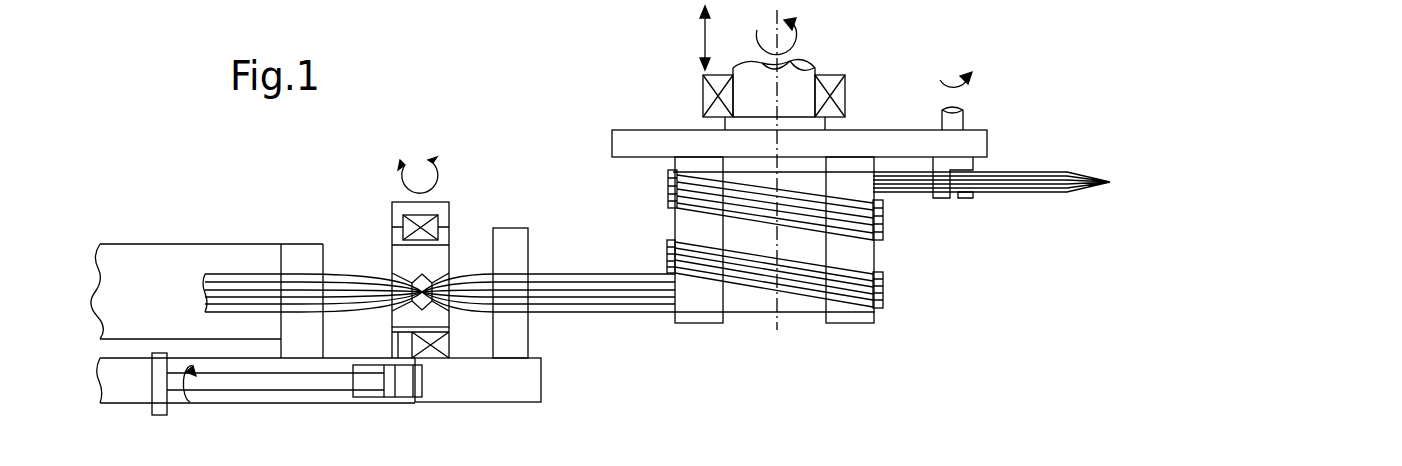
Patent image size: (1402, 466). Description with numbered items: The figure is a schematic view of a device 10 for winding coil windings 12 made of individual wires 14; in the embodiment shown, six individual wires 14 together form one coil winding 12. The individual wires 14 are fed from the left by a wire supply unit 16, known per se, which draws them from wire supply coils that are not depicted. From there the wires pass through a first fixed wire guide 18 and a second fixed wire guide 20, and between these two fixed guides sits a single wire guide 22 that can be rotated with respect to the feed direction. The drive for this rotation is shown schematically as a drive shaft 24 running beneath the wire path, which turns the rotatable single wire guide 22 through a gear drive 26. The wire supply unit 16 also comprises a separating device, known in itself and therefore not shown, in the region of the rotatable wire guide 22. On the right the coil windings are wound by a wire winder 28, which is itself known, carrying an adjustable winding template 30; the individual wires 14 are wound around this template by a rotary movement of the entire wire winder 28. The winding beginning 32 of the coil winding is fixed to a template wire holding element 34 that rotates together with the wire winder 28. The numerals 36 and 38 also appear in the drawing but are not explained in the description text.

The device for winding coil windings 10 is at (549, 205).
The coil winding 12 is at (765, 293).
The individual wires 14 is at (266, 313).
The wire supply unit 16 is at (153, 257).
The first fixed wire guide 18 is at (298, 244).
The second fixed wire guide 20 is at (502, 228).
The rotatable single wire guide 22 is at (402, 261).
The drive shaft 24 is at (250, 392).
The gear drive 26 is at (398, 398).
The wire winder 28 is at (848, 128).
The adjustable winding template 30 is at (674, 222).
The winding beginning 32 is at (1085, 177).
The template wire holding element 34 is at (958, 160).
The gripper 36 is at (1139, 454).
The gripper arm 38 is at (1071, 465).